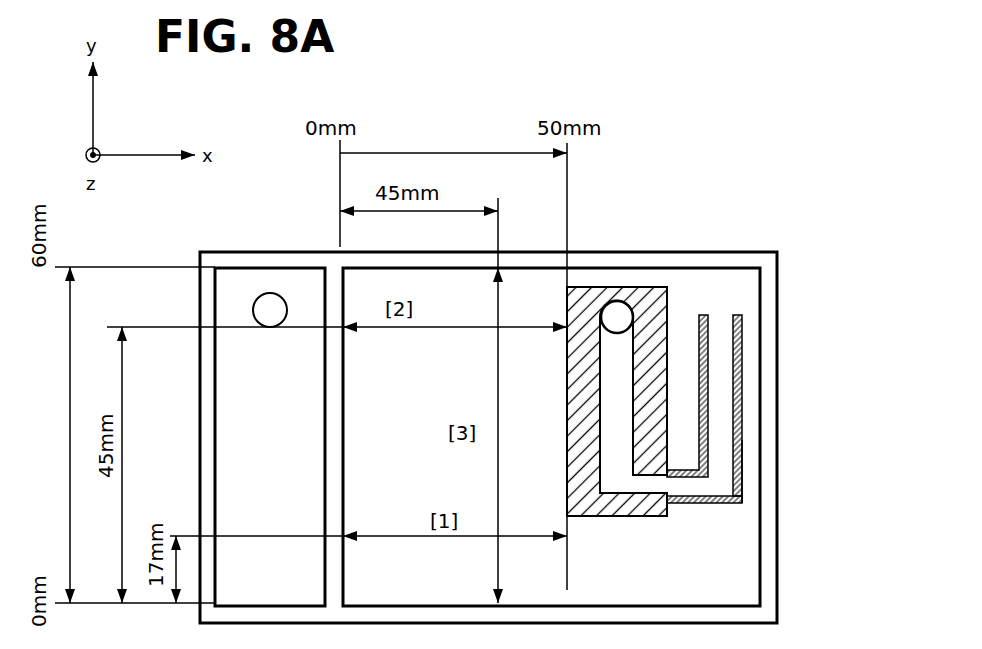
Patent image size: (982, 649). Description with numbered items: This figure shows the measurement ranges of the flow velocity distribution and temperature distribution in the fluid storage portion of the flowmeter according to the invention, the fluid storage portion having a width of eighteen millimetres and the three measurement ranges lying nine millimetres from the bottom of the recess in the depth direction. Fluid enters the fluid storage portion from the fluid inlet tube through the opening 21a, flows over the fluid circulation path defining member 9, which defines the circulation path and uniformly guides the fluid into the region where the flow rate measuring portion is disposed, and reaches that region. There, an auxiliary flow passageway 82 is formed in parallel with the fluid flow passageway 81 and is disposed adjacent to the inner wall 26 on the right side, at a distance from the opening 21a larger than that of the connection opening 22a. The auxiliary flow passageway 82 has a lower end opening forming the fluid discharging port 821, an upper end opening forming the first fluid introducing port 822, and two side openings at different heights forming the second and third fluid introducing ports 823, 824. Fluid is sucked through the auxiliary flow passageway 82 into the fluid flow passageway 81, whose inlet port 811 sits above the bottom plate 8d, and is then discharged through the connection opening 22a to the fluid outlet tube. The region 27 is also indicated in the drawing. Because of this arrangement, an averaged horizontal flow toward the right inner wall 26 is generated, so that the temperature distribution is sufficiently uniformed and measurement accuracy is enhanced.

The fluid circulation path defining member 9 is at (343, 497).
The inner wall 26 is at (777, 595).
The mounting area 27 is at (443, 567).
The opening 21a is at (268, 327).
The connection opening 22a is at (617, 302).
The fluid flow passageway 81 is at (567, 401).
The fluid flow passageway inlet port 811 is at (612, 517).
The bottom plate 8d is at (657, 516).
The auxiliary flow passageway 82 is at (750, 380).
The fluid discharging port 821 is at (717, 503).
The first fluid introducing port 822 is at (703, 315).
The second fluid introducing port 823 is at (742, 355).
The third fluid introducing port 824 is at (745, 468).